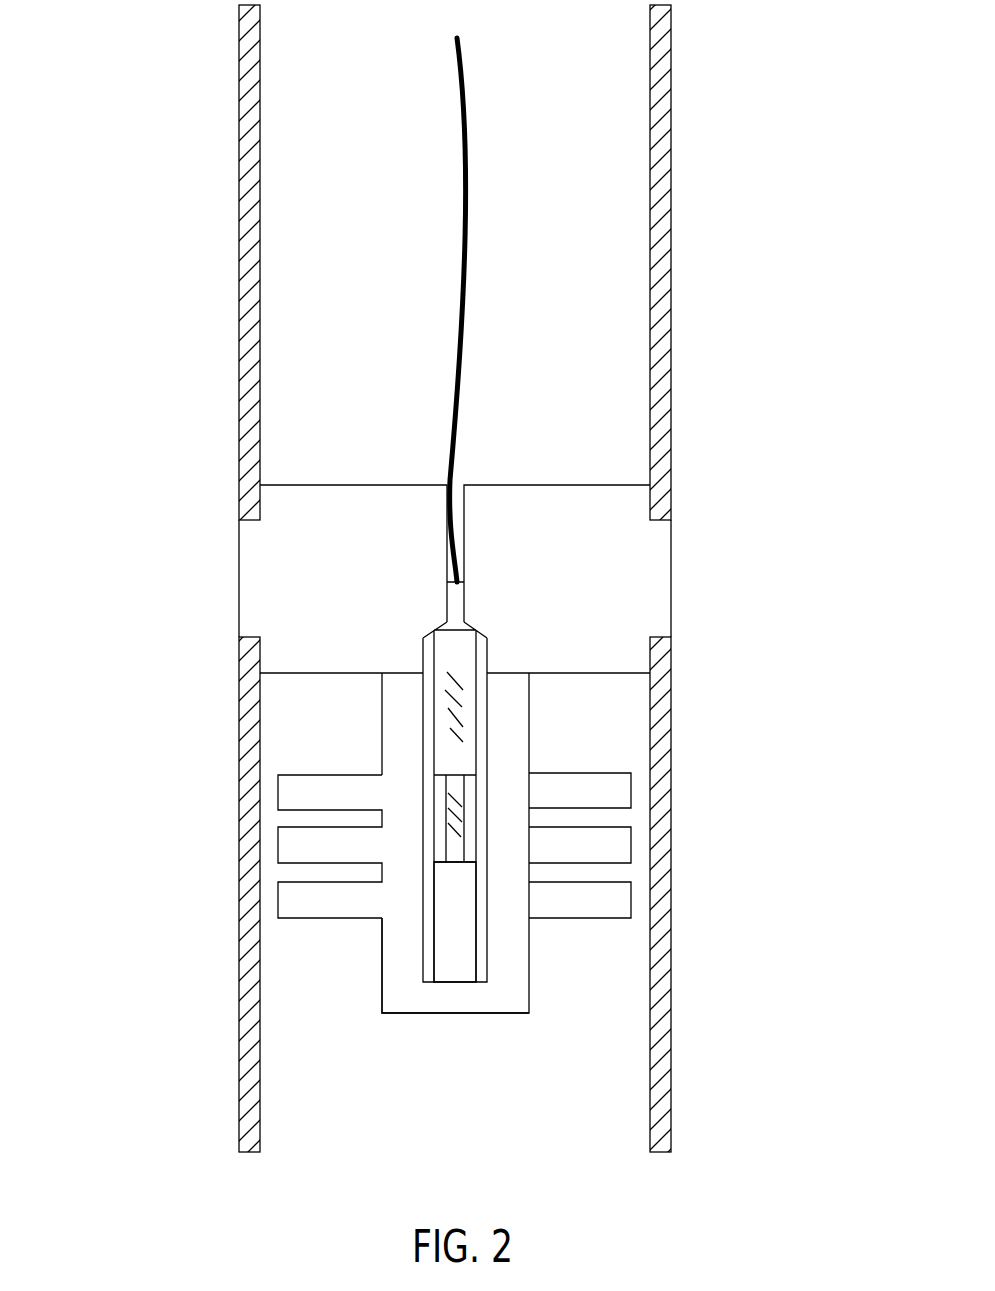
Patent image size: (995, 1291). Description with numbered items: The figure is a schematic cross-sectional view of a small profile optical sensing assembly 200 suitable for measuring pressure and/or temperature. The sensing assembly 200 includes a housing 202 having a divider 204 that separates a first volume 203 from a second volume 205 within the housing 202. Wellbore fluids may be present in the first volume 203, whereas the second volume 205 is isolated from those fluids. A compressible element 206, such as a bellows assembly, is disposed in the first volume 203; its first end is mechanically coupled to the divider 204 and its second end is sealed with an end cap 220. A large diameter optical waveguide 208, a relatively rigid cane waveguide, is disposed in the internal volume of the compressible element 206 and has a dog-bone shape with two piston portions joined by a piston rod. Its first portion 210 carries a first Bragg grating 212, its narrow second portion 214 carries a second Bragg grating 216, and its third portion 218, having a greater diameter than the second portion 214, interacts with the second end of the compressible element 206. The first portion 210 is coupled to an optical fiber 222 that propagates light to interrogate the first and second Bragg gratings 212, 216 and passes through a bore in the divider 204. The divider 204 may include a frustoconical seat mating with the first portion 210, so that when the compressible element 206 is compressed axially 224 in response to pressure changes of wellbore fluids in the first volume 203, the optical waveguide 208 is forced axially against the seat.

The small profile optical sensing assembly 200 is at (135, 75).
The housing 202 is at (671, 238).
The first volume 203 is at (564, 1018).
The divider 204 is at (633, 569).
The second volume 205 is at (394, 250).
The compressible element 206 is at (297, 903).
The large diameter optical waveguide 208 is at (773, 683).
The first portion 210 is at (483, 627).
The first Bragg grating 212 is at (462, 682).
The second portion 214 is at (467, 780).
The second Bragg grating 216 is at (446, 810).
The third portion 218 is at (483, 862).
The end cap 220 is at (407, 995).
The optical fiber 222 is at (467, 203).
The axial compression 224 is at (182, 892).